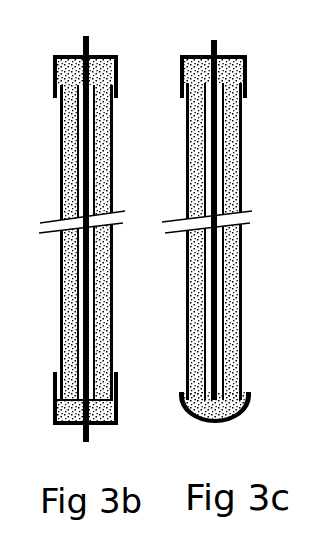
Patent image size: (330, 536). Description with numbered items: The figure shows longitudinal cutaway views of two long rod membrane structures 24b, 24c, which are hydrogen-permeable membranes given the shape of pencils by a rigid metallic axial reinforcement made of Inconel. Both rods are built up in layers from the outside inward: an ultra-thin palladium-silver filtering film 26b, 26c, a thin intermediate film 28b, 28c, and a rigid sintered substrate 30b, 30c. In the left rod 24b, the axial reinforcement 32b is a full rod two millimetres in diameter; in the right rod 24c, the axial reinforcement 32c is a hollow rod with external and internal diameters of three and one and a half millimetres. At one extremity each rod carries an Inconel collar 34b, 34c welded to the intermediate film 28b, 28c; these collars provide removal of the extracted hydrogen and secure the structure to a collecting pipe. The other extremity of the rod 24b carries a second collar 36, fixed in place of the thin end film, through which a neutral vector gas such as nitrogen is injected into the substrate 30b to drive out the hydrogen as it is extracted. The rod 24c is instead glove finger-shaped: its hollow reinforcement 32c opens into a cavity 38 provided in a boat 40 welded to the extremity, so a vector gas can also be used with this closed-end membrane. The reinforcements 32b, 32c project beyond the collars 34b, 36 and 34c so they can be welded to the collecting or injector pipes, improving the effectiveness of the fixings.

In FIG. 3B, the long rod membrane structure 24b is at (74, 250).
In FIG. 3B, the ultra-thin filtering film 26b is at (61, 123).
In FIG. 3B, the thin intermediate film 28b is at (62, 172).
In FIG. 3B, the rigid sintered substrate 30b is at (62, 295).
In FIG. 3B, the axial reinforcement 32b is at (50, 277).
In FIG. 3B, the collar 34b is at (54, 58).
In FIG. 3B, the collar 36 is at (118, 424).
In FIG. 3C, the long rod membrane structure 24c is at (187, 255).
In FIG. 3C, the ultra-thin filtering film 26c is at (188, 120).
In FIG. 3C, the thin intermediate film 28c is at (192, 170).
In FIG. 3C, the rigid sintered substrate 30c is at (203, 300).
In FIG. 3C, the hollow axial reinforcement 32c is at (175, 262).
In FIG. 3C, the collar 34c is at (180, 80).
In FIG. 3C, the cavity 38 is at (225, 412).
In FIG. 3C, the boat 40 is at (200, 423).